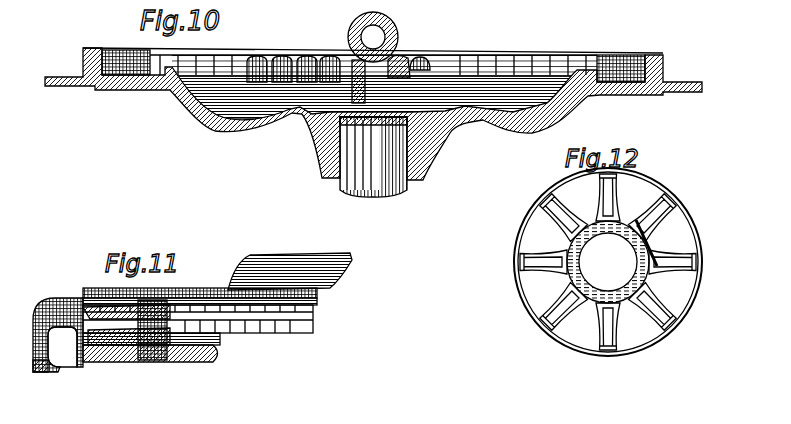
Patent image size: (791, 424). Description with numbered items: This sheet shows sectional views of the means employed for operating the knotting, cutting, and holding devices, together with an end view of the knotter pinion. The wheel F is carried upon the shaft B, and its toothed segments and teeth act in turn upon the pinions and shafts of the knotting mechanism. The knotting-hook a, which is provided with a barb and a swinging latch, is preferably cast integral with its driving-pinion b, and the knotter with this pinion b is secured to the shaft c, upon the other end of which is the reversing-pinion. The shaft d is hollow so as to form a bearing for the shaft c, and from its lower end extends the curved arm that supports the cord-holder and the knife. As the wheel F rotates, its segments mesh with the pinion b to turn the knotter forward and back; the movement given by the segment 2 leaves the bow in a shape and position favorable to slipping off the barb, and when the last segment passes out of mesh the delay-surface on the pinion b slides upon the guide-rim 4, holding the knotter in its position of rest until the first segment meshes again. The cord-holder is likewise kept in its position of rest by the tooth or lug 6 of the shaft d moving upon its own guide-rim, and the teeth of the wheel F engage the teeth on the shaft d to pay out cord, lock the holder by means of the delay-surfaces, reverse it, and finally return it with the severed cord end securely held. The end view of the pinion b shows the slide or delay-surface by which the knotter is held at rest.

In FIG. 10, the guide-rim 4 is at (373, 106).
In FIG. 11, the guide-rim 4 is at (198, 333).
In FIG. 10, the segment 2 is at (310, 62).
In FIG. 10, the shaft c is at (373, 37).
In FIG. 12, the shaft c is at (608, 262).
In FIG. 10, the driving-pinion b is at (360, 100).
In FIG. 11, the driving-pinion b is at (85, 298).
In FIG. 12, the driving-pinion b is at (608, 262).
In FIG. 10, the shaft d is at (392, 88).
In FIG. 10, the tooth or lug 6 is at (415, 70).
In FIG. 10, the shaft B is at (373, 157).
In FIG. 10, the wheel F is at (246, 124).
In FIG. 11, the wheel F is at (262, 262).
In FIG. 11, the knotting-hook a is at (70, 298).